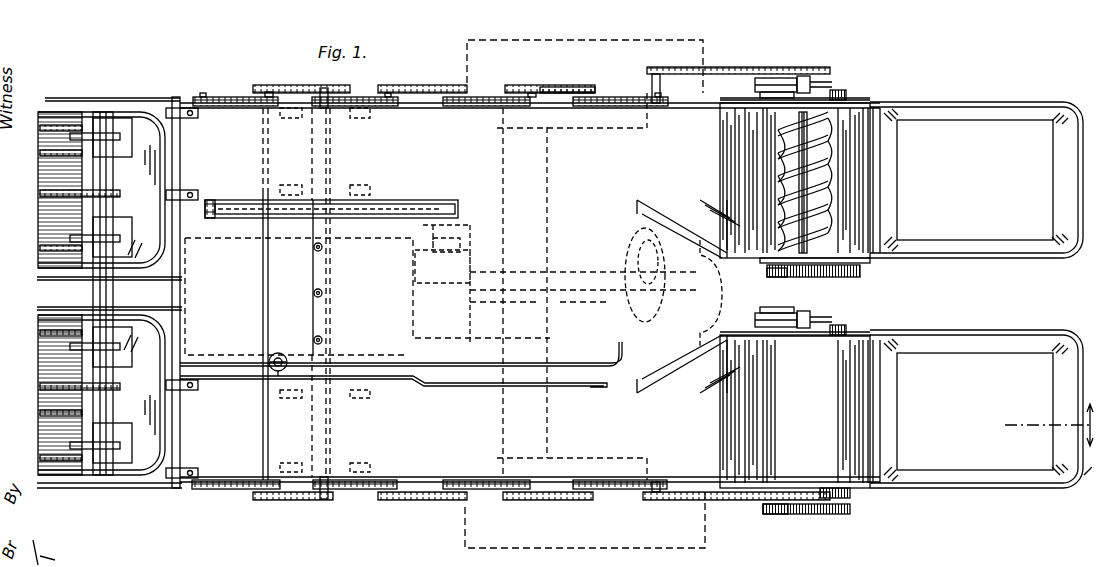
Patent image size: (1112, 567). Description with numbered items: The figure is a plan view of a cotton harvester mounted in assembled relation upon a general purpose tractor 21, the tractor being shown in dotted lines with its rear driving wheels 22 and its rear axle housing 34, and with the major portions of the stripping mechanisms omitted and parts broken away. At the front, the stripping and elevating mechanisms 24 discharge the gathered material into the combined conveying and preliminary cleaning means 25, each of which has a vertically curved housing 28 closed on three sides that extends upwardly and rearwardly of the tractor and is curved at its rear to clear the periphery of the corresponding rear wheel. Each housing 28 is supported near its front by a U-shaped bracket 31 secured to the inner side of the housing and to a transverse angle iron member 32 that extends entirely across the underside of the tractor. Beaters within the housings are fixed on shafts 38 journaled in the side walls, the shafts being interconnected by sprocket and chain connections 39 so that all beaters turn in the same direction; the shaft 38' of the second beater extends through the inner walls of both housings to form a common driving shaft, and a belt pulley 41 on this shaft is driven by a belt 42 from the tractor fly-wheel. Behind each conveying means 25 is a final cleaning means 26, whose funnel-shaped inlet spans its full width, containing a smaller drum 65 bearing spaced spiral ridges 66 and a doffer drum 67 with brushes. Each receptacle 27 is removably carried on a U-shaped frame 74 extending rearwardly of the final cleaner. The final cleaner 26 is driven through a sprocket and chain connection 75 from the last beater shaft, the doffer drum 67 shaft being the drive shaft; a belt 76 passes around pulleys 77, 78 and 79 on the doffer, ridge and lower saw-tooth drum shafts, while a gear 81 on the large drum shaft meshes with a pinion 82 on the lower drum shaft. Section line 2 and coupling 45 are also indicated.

The section line 2 is at (1055, 425).
The general purpose tractor 21 is at (482, 258).
The rear driving wheels 22 is at (703, 43).
The stripping and elevating mechanisms 24 is at (42, 193).
The combined conveying and preliminary cleaning means 25 is at (423, 122).
The final cleaning means 26 is at (860, 105).
The receptacles 27 is at (1000, 120).
The vertically curved housing 28 is at (540, 97).
The U-shaped bracket 31 is at (347, 120).
The transverse angle iron member 32 is at (330, 178).
The rear axle housing 34 is at (636, 136).
The shaft 38 is at (460, 303).
The common driving shaft 38' is at (367, 296).
The sprocket and chain connections 39 is at (253, 98).
The belt pulley 41 is at (222, 218).
The belt 42 is at (372, 220).
The coupling 45 is at (490, 236).
The smaller drum 65 is at (812, 215).
The spiral ridges 66 is at (828, 190).
The doffer drum 67 is at (848, 96).
The U-shaped frame 74 is at (975, 92).
The sprocket and chain connection 75 is at (714, 75).
The belt 76 is at (808, 78).
The pulley 77 is at (840, 82).
The pulley 78 is at (803, 78).
The pulley 79 is at (782, 78).
The gear 81 is at (862, 271).
The pinion 82 is at (766, 274).